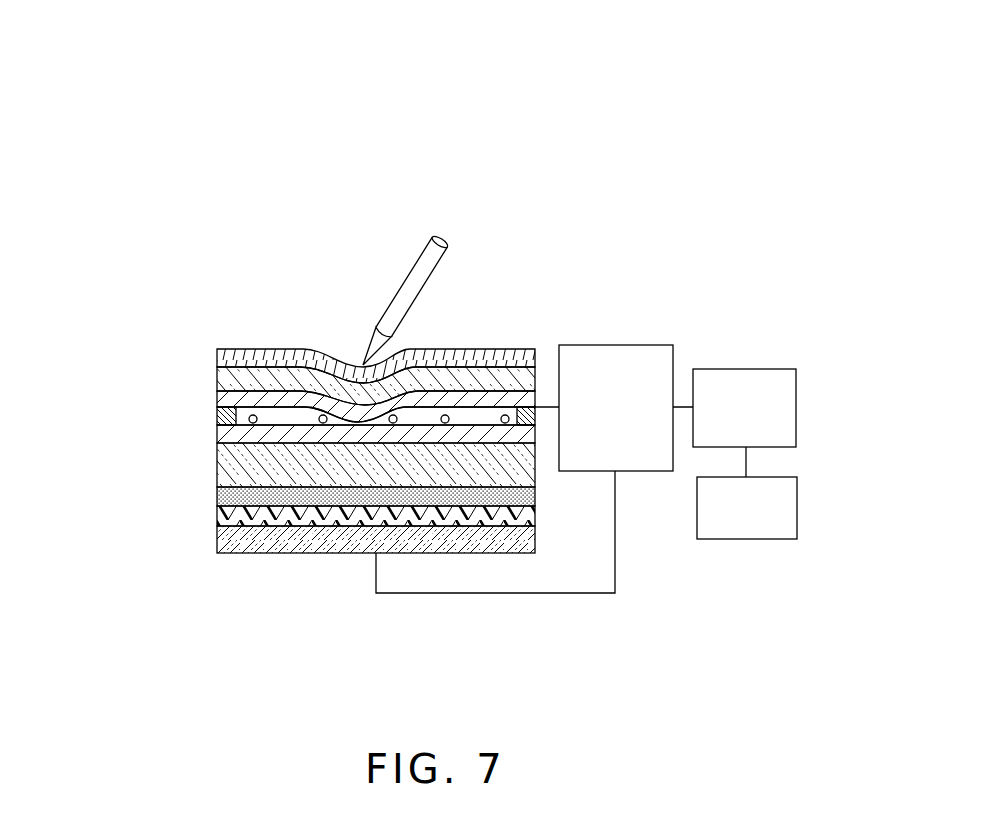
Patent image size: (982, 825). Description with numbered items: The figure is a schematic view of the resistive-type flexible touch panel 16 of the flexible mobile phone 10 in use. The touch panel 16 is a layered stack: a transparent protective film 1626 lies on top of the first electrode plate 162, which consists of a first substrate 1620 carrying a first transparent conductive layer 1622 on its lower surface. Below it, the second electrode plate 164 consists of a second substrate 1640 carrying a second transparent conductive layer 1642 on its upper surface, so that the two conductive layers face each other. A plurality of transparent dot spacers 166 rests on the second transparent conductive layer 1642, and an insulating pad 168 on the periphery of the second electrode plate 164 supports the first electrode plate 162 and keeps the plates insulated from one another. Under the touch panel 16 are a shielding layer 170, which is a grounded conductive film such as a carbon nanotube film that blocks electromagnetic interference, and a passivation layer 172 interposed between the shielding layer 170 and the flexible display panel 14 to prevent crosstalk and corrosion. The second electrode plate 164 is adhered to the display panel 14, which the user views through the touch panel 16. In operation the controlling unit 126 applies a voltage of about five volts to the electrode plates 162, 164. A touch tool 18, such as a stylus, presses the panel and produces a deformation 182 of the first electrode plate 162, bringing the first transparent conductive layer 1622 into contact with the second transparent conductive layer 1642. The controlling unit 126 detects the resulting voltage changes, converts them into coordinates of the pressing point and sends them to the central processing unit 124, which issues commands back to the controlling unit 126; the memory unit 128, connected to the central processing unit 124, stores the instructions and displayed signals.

The flexible mobile phone 10 is at (368, 77).
The flexible display panel 14 is at (217, 541).
The flexible touch panel 16 is at (80, 353).
The touch tool 18 is at (420, 275).
The deformation 182 is at (360, 362).
The first electrode plate 162 is at (129, 358).
The first substrate 1620 is at (217, 369).
The first transparent conductive layer 1622 is at (217, 399).
The transparent protective film 1626 is at (217, 352).
The second electrode plate 164 is at (129, 420).
The second transparent conductive layer 1642 is at (217, 432).
The second substrate 1640 is at (217, 465).
The transparent dot spacers 166 is at (470, 405).
The insulating pad 168 is at (537, 430).
The shielding layer 170 is at (217, 496).
The passivation layer 172 is at (217, 514).
The central processing unit 124 is at (743, 370).
The controlling unit 126 is at (618, 353).
The memory unit 128 is at (735, 540).